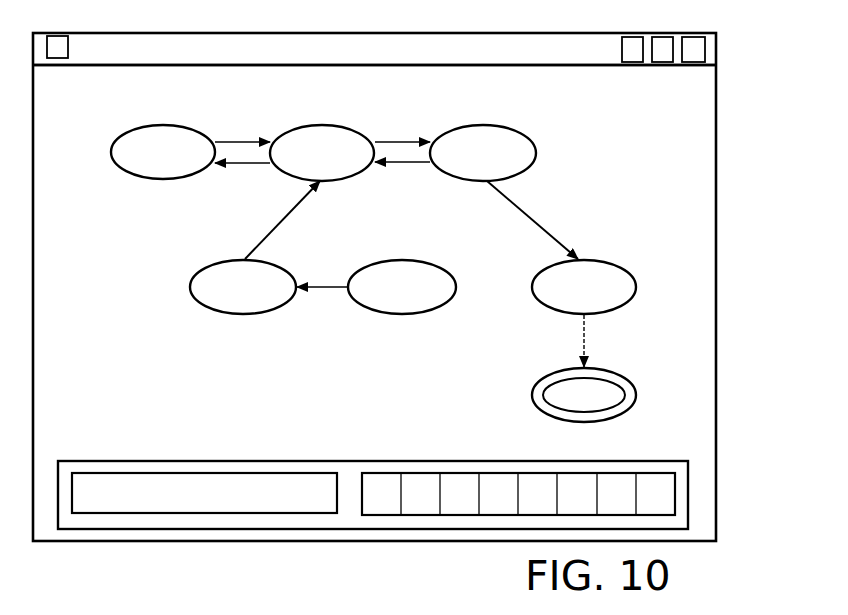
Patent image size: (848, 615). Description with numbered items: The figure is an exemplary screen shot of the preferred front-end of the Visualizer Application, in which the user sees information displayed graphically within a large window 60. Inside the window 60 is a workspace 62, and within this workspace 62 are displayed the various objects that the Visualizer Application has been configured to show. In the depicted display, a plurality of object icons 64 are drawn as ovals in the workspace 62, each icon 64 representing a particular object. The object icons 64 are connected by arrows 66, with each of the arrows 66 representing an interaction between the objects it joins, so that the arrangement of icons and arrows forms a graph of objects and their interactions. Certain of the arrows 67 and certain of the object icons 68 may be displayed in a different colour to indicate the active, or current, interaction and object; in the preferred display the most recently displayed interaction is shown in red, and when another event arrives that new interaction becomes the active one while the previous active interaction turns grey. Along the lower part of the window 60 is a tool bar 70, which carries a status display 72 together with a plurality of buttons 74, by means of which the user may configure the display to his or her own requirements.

The window 60 is at (716, 172).
The workspace 62 is at (548, 75).
The object icons 64 is at (535, 155).
The arrows 66 is at (548, 231).
The active arrow 67 is at (586, 337).
The active object icon 68 is at (532, 395).
The tool bar 70 is at (113, 458).
The status display 72 is at (186, 470).
The buttons 74 is at (370, 470).